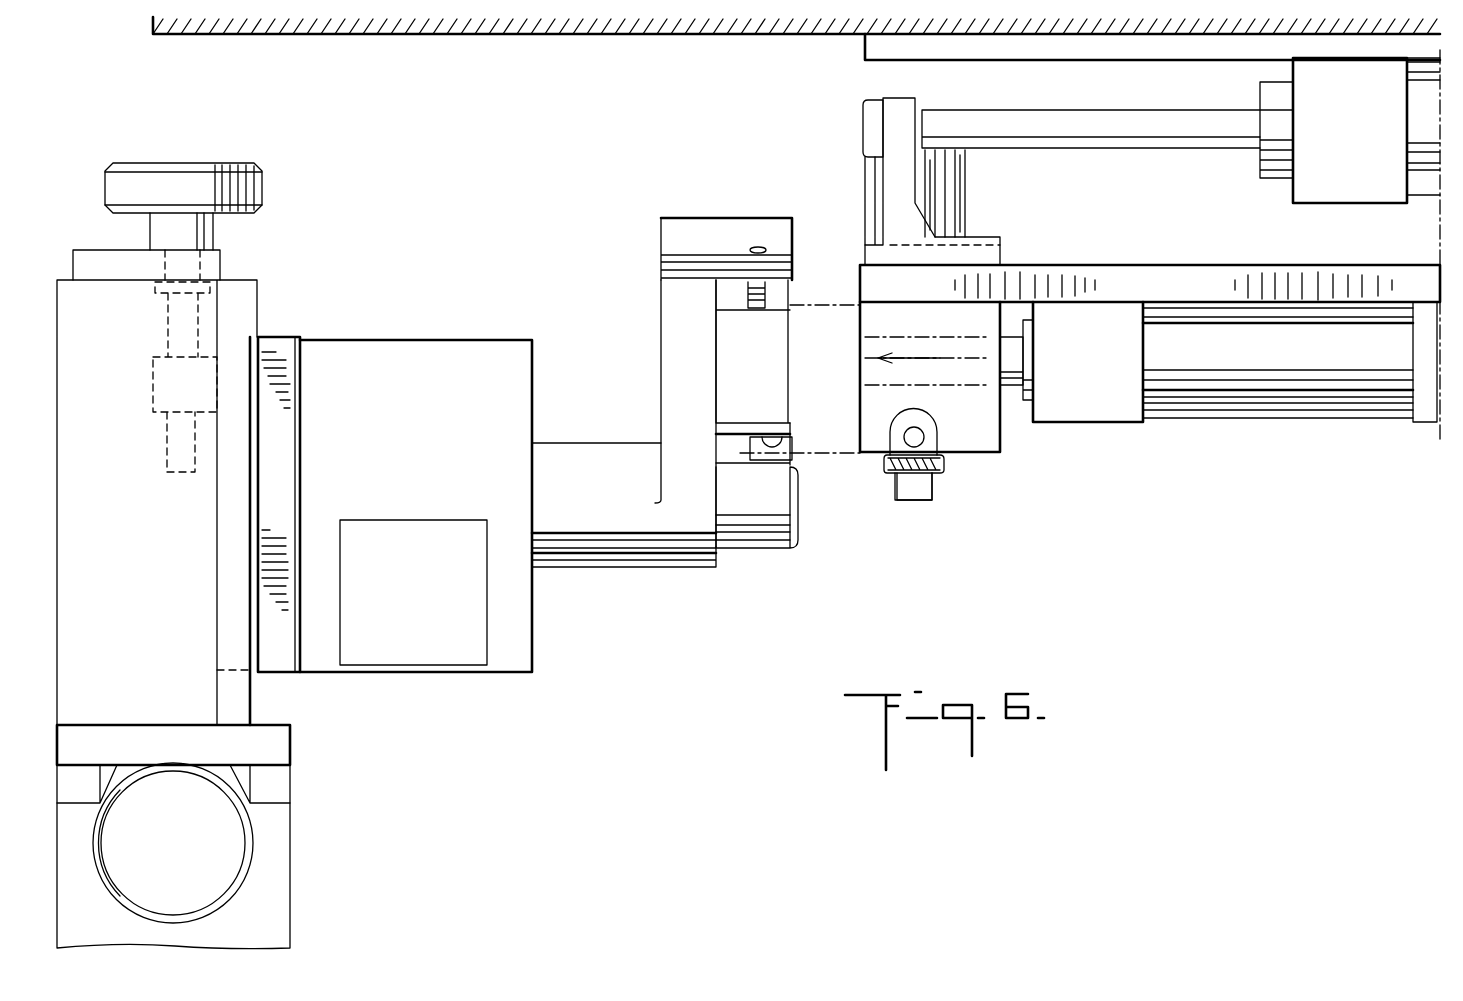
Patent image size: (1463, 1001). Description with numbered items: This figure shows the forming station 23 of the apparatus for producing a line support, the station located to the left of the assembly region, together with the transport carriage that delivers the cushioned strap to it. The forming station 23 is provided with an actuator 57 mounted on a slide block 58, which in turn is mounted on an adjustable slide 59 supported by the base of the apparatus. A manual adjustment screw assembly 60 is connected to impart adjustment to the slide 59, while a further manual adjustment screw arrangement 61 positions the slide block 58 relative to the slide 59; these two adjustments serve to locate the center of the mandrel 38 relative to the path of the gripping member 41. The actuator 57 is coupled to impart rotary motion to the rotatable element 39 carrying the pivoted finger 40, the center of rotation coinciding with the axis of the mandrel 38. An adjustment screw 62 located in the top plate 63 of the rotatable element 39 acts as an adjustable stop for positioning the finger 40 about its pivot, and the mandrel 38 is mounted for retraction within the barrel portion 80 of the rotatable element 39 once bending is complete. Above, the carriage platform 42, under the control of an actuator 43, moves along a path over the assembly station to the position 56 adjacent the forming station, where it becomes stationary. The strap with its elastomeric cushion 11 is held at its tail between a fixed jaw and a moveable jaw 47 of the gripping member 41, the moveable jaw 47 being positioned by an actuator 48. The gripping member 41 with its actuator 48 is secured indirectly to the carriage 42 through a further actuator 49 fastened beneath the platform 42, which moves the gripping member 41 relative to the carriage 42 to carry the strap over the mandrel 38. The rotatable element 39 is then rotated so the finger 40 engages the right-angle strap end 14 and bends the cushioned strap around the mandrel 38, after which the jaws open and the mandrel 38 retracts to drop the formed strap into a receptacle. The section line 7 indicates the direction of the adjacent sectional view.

The section line 7- 7 is at (1013, 78).
The elastomeric cushion 11 is at (900, 477).
The strap end 14 is at (930, 432).
The forming station 23 is at (553, 755).
The mandrel 38 is at (775, 527).
The rotatable element 39 is at (661, 362).
The pivoted finger 40 is at (778, 376).
The gripping member 41 is at (961, 472).
The carriage platform 42 is at (1168, 272).
The actuator 43 is at (1425, 160).
The moveable jaw 47 is at (930, 490).
The actuator 48 is at (940, 200).
The further actuator 49 is at (1265, 393).
The carriage position 56 is at (1161, 495).
The actuator 57 is at (422, 653).
The slide block 58 is at (408, 340).
The adjustable slide 59 is at (290, 745).
The manual adjustment screw assembly 60 is at (228, 835).
The manual adjustment screw arrangement 61 is at (240, 163).
The adjustment screw 62 is at (765, 296).
The top plate 63 is at (730, 218).
The barrel portion 80 is at (612, 551).